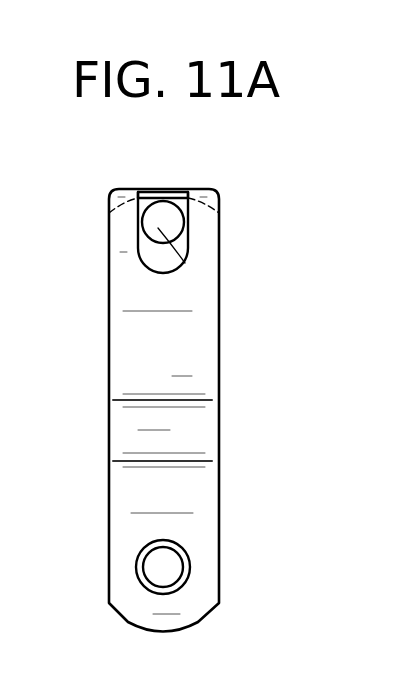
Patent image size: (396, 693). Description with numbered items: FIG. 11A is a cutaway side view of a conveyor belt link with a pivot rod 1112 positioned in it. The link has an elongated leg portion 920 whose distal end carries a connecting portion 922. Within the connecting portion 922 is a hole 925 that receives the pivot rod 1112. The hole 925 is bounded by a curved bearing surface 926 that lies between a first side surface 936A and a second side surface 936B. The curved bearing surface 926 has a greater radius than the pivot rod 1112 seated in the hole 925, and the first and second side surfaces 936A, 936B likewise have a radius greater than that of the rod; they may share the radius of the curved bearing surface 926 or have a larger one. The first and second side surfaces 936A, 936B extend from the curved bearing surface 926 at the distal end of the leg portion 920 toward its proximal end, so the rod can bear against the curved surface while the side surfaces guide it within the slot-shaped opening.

The leg portion 920 is at (205, 350).
The connecting portion 922 is at (163, 192).
The hole 925 is at (184, 222).
The curved bearing surface 926 is at (167, 198).
The first side surface 936A is at (140, 192).
The second side surface 936B is at (188, 192).
The pivot rod 1112 is at (185, 264).